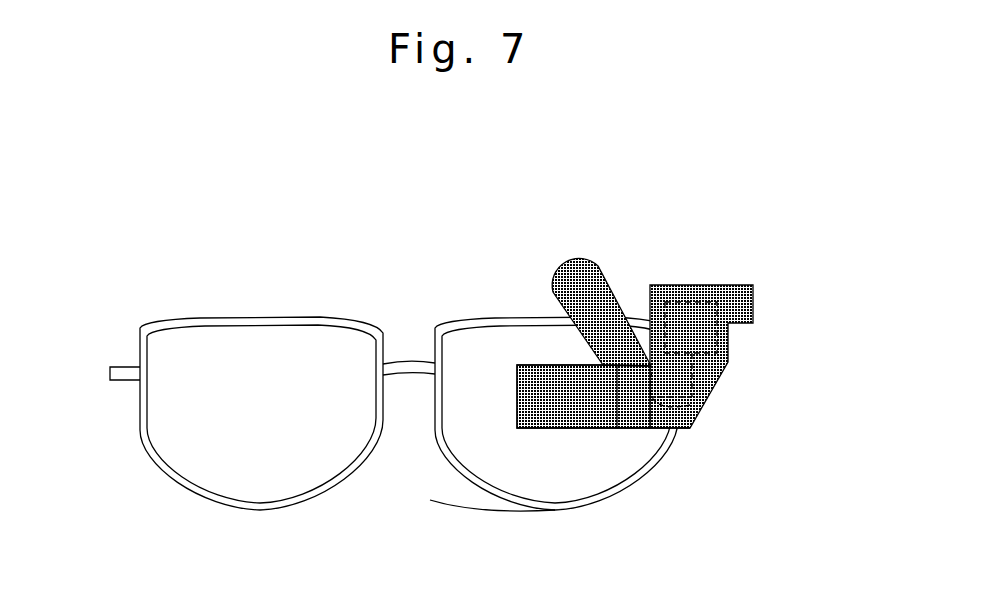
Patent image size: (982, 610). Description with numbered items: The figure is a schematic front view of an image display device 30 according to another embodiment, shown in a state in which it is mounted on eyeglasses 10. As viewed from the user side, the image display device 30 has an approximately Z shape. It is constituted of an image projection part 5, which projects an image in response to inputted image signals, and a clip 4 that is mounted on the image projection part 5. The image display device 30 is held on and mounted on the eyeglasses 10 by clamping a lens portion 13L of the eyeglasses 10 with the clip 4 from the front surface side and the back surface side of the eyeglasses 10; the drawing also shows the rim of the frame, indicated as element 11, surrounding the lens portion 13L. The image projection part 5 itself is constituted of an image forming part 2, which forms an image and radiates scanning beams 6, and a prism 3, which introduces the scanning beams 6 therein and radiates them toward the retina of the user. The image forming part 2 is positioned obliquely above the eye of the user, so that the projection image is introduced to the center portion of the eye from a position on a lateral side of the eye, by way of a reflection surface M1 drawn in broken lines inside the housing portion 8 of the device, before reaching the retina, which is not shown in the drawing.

The eyeglasses 10 is at (394, 397).
The image display device 30 is at (642, 347).
The clip 4 is at (556, 255).
The image display unit housing 8 is at (671, 359).
The reflection surface M1 is at (717, 385).
The scanning beams 6 is at (647, 456).
The image forming part 2 is at (647, 430).
The prism 3 is at (588, 430).
The image projection part 5 is at (647, 456).
The lens portion 13L is at (525, 462).
The rim 11 is at (587, 507).